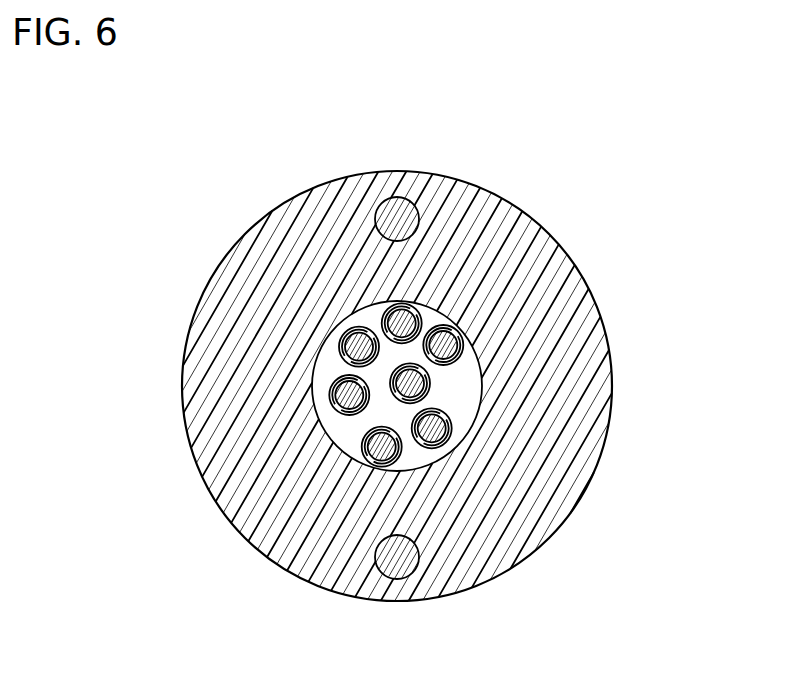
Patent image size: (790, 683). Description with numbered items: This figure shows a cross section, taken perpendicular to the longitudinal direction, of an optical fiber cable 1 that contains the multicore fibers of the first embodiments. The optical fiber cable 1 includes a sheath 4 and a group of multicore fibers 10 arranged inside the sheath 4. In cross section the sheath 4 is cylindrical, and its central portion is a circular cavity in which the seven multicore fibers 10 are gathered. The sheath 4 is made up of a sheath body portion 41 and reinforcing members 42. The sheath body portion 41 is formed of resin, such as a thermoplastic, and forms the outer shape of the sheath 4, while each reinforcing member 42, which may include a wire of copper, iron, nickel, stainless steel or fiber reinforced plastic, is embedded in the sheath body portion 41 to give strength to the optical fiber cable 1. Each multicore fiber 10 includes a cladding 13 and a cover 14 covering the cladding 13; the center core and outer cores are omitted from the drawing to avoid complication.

The optical fiber cable 1 is at (633, 127).
The sheath 4 is at (572, 257).
The sheath body portion 41 is at (577, 315).
The reinforcing member 42 is at (405, 210).
The multicore fiber 10 is at (405, 320).
The cladding 13 is at (327, 392).
The cover 14 is at (343, 378).